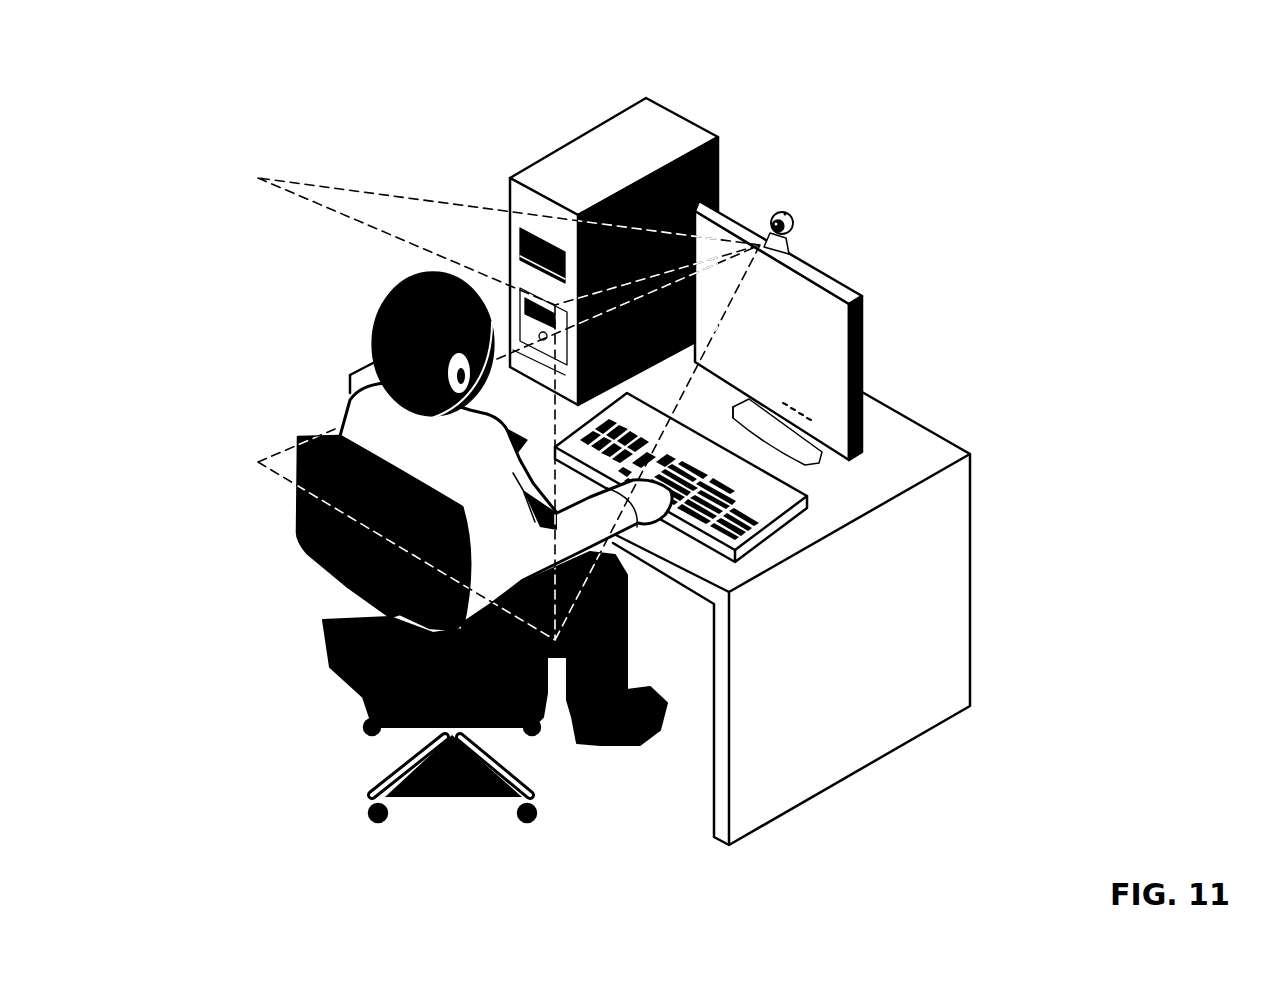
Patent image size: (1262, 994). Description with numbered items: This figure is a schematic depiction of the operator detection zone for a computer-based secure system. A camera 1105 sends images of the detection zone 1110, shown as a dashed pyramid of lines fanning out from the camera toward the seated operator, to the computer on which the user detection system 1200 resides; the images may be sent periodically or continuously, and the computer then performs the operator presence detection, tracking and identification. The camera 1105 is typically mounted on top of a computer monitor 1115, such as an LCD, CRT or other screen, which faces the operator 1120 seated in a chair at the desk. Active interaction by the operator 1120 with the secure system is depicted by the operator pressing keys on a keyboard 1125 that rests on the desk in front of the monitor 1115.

The user detection system 1200 is at (610, 118).
The camera 1105 is at (795, 222).
The detection zone 1110 is at (246, 222).
The computer monitor 1115 is at (862, 308).
The operator 1120 is at (372, 347).
The keyboard 1125 is at (780, 538).